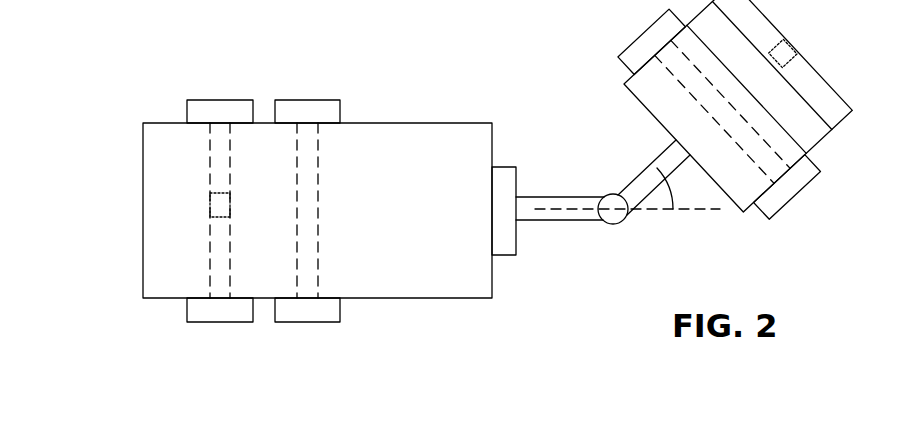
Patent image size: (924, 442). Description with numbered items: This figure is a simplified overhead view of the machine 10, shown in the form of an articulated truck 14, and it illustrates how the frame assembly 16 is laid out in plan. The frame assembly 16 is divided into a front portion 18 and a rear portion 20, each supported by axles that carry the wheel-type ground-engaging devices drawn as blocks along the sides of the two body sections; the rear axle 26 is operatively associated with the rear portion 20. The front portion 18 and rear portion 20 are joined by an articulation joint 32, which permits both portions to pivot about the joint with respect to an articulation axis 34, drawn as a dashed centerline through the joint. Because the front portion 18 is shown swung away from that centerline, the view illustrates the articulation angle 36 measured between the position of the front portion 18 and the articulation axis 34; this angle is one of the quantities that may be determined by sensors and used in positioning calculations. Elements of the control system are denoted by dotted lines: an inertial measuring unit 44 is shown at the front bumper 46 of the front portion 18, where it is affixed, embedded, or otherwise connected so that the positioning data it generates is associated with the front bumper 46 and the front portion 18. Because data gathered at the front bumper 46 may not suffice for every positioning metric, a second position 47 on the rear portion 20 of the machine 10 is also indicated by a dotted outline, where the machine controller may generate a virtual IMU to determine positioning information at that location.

The machine 10 is at (448, 72).
The articulated truck 14 is at (390, 110).
The frame assembly 16 is at (609, 145).
The front portion 18 is at (633, 116).
The rear portion 20 is at (500, 150).
The rear axle 26 is at (210, 288).
The articulation joint 32 is at (605, 192).
The articulation axis 34 is at (580, 210).
The articulation angle 36 is at (668, 200).
The inertial measuring unit (IMU) 44 is at (783, 53).
The front bumper 46 is at (211, 200).
The second position 47 is at (212, 215).